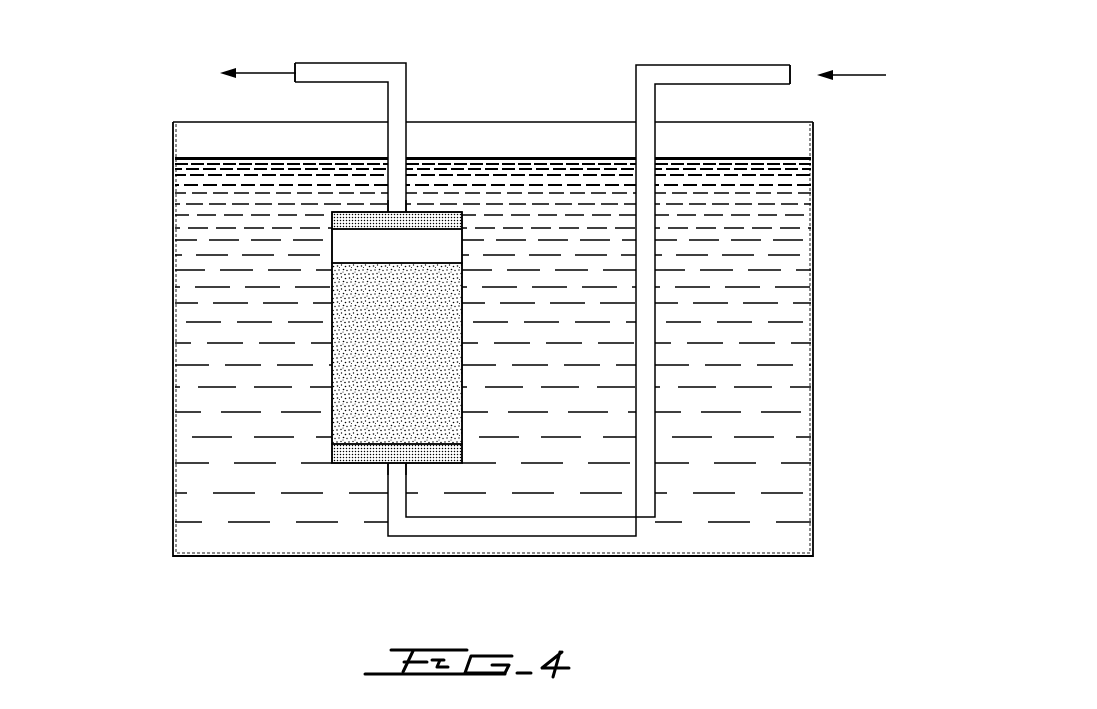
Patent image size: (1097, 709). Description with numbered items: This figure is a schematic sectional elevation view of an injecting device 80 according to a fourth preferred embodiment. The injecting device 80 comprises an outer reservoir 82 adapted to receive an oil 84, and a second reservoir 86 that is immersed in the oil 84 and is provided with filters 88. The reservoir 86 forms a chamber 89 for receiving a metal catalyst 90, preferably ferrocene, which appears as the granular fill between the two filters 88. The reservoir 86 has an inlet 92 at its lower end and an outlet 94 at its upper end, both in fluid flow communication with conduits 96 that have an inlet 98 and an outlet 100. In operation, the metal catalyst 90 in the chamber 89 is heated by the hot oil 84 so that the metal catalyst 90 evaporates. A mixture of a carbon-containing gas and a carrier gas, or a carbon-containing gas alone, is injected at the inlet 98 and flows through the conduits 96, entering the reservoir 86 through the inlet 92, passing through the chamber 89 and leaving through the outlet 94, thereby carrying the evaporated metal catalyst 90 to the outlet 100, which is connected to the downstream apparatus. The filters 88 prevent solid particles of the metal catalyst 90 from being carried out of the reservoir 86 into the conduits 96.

The injecting device 80 is at (474, 303).
The reservoir 82 is at (173, 323).
The oil 84 is at (204, 482).
The reservoir 86 is at (339, 342).
The filters 88 is at (362, 220).
The chamber 89 is at (355, 245).
The metal catalyst 90 is at (360, 363).
The inlet 92 is at (396, 469).
The outlet 94 is at (400, 205).
The conduits 96 is at (395, 72).
The inlet 98 is at (783, 75).
The outlet 100 is at (297, 70).